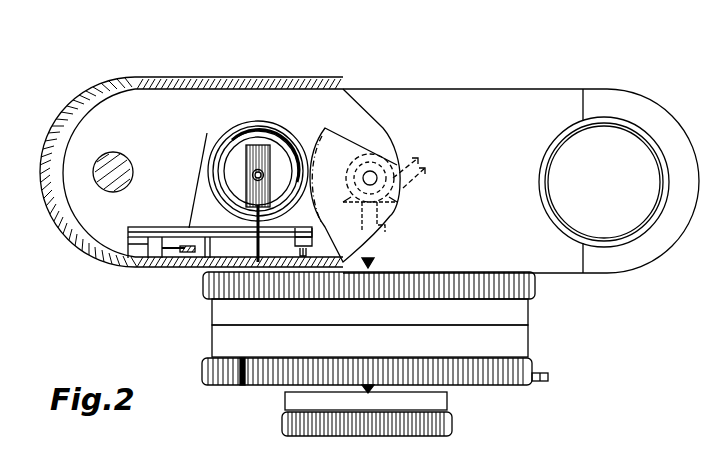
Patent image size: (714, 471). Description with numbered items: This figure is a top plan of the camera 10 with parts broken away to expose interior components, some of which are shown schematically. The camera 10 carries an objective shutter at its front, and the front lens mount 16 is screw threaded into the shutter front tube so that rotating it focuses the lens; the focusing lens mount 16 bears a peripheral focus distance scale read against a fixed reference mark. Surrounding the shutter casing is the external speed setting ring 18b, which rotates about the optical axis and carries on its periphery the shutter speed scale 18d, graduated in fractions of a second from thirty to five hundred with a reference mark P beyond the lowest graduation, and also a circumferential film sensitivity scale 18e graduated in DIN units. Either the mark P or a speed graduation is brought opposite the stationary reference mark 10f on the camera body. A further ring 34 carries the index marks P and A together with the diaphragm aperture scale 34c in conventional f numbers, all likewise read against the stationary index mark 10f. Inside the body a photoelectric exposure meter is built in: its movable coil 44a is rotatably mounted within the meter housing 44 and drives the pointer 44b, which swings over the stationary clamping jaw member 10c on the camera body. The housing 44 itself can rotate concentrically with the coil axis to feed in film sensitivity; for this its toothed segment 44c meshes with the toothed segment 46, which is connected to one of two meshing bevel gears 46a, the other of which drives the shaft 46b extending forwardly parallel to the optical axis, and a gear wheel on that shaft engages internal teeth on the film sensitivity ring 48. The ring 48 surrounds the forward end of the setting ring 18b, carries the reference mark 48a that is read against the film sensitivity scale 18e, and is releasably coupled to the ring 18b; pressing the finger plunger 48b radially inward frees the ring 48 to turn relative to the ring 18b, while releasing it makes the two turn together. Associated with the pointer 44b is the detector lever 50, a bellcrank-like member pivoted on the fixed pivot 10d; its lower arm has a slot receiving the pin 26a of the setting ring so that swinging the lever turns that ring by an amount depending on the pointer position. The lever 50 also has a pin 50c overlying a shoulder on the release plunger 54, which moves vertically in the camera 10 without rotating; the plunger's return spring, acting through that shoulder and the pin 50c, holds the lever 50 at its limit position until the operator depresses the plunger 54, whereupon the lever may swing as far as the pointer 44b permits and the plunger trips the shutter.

The camera 10 is at (508, 97).
The clamping jaw member 10c is at (200, 206).
The fixed pivot 10d is at (133, 262).
The reference mark 10f is at (372, 262).
The front lens mount 16 is at (285, 428).
The external speed setting ring 18b is at (517, 347).
The shutter speed scale 18d is at (462, 346).
The film sensitivity scale 18e is at (210, 343).
The pin 26a is at (303, 272).
The ring 34 is at (211, 300).
The diaphragm aperture scale 34c is at (512, 309).
The meter housing 44 is at (222, 170).
The movable coil 44a is at (252, 145).
The pointer 44b is at (257, 266).
The segment 44c is at (285, 135).
The toothed segment 46 is at (335, 140).
The bevel gears 46a is at (420, 164).
The shaft 46b is at (403, 213).
The film sensitivity ring 48 is at (205, 375).
The reference mark 48a is at (243, 387).
The finger plunger 48b is at (548, 378).
The detector lever 50 is at (135, 234).
The pin 50c is at (208, 258).
The release plunger 54 is at (185, 250).